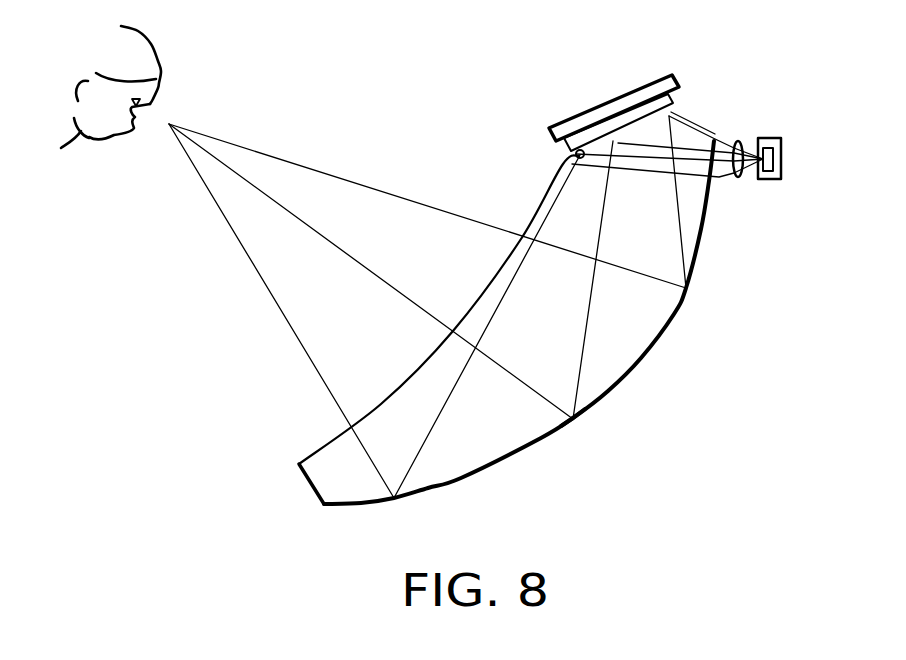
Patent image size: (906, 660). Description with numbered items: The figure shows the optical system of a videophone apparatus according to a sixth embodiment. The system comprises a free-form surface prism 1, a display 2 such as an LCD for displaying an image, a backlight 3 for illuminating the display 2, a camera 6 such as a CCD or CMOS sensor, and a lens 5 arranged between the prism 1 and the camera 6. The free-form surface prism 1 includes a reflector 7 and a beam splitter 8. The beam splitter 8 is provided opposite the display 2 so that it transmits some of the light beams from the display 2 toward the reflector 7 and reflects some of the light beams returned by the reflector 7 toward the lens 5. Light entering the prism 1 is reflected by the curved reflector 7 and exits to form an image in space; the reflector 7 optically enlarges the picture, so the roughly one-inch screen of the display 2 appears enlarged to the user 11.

The free-form surface prism 1 is at (318, 478).
The display 2 is at (674, 97).
The backlight 3 is at (600, 103).
The lens 5 is at (740, 170).
The camera 6 is at (773, 143).
The reflector 7 is at (572, 420).
The beam splitter 8 is at (572, 153).
The user 11 is at (160, 64).